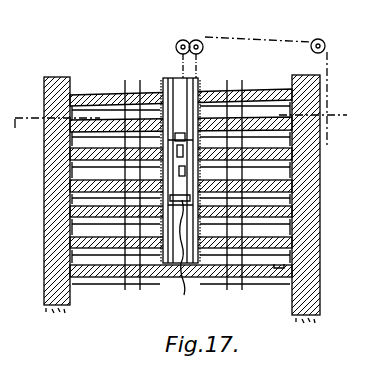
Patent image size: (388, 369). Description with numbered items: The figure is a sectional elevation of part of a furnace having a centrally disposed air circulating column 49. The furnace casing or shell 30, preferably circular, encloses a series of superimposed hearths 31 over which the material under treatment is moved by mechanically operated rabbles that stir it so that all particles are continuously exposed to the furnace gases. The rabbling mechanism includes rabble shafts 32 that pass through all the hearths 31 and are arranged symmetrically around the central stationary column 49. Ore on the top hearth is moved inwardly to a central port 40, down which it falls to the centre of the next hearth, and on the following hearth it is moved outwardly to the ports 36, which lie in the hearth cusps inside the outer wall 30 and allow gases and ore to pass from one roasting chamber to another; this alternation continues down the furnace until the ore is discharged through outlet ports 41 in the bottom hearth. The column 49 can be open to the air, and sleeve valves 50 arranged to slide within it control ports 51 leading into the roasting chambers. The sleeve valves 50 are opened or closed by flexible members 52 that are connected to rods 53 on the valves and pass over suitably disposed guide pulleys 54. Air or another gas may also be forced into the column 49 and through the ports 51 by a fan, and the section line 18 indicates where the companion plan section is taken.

The section line 18 is at (357, 127).
The furnace casing or shell 30 is at (320, 150).
The hearths 31 is at (181, 119).
The rabble shafts 32 is at (129, 76).
The ports or passages 36 is at (70, 192).
The central port 40 is at (160, 178).
The outlet ports 41 is at (284, 266).
The central stationary column 49 is at (200, 80).
The sleeve valves 50 is at (196, 142).
The ports 51 is at (160, 150).
The flexible members 52 is at (258, 31).
The rods 53 is at (168, 76).
The guide pulleys 54 is at (183, 40).